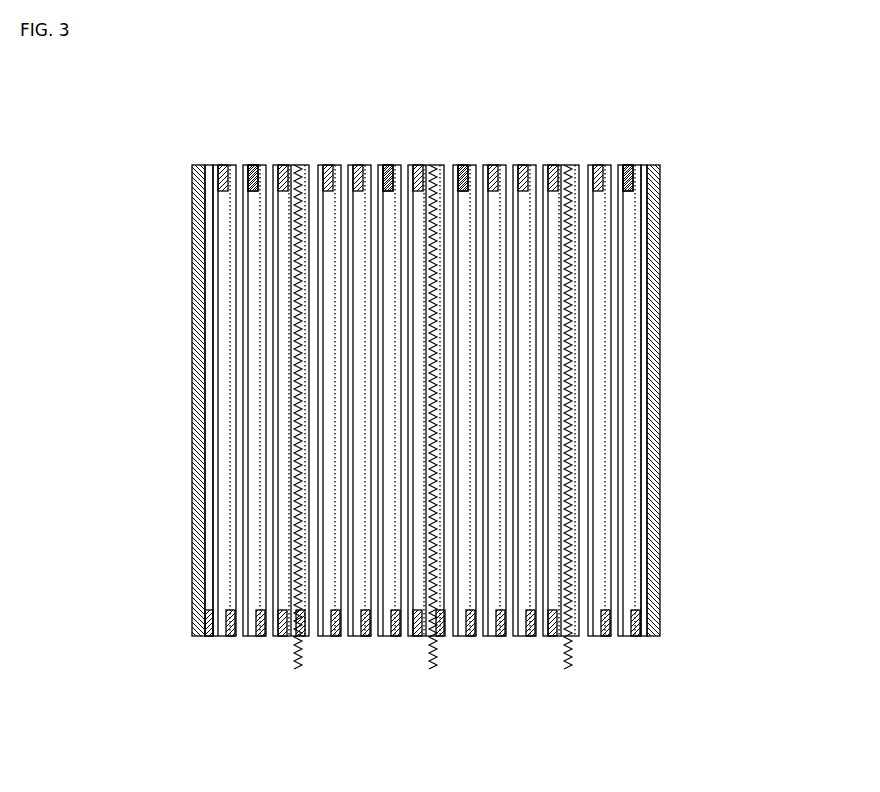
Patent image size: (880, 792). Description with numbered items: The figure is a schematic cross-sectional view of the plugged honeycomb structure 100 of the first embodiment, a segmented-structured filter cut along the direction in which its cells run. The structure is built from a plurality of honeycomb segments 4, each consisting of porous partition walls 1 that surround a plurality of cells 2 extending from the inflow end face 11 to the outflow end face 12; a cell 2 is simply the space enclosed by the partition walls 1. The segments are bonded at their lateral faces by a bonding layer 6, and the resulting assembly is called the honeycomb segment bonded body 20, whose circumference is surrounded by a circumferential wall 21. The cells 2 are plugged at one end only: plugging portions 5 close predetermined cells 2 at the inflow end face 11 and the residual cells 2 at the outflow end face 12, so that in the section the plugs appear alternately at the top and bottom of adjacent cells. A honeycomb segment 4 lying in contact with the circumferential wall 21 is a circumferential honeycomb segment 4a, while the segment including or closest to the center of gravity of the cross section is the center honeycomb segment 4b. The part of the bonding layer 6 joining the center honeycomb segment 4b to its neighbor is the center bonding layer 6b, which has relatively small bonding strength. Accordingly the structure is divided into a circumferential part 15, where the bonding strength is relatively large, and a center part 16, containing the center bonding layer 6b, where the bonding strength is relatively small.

The plugged honeycomb structure 100 is at (749, 66).
The partition wall 1 is at (487, 180).
The cell 2 is at (507, 186).
The honeycomb segment 4 is at (250, 186).
The circumferential honeycomb segment 4a is at (440, 178).
The center honeycomb segment 4b is at (425, 178).
The plugging portion 5 is at (560, 182).
The bonding layer 6 is at (300, 638).
The center bonding layer 6b is at (370, 623).
The inflow end face 11 is at (212, 150).
The outflow end face 12 is at (201, 654).
The circumferential part 15 is at (243, 650).
The center part 16 is at (425, 650).
The honeycomb segment bonded body 20 is at (641, 158).
The circumferential wall 21 is at (193, 285).